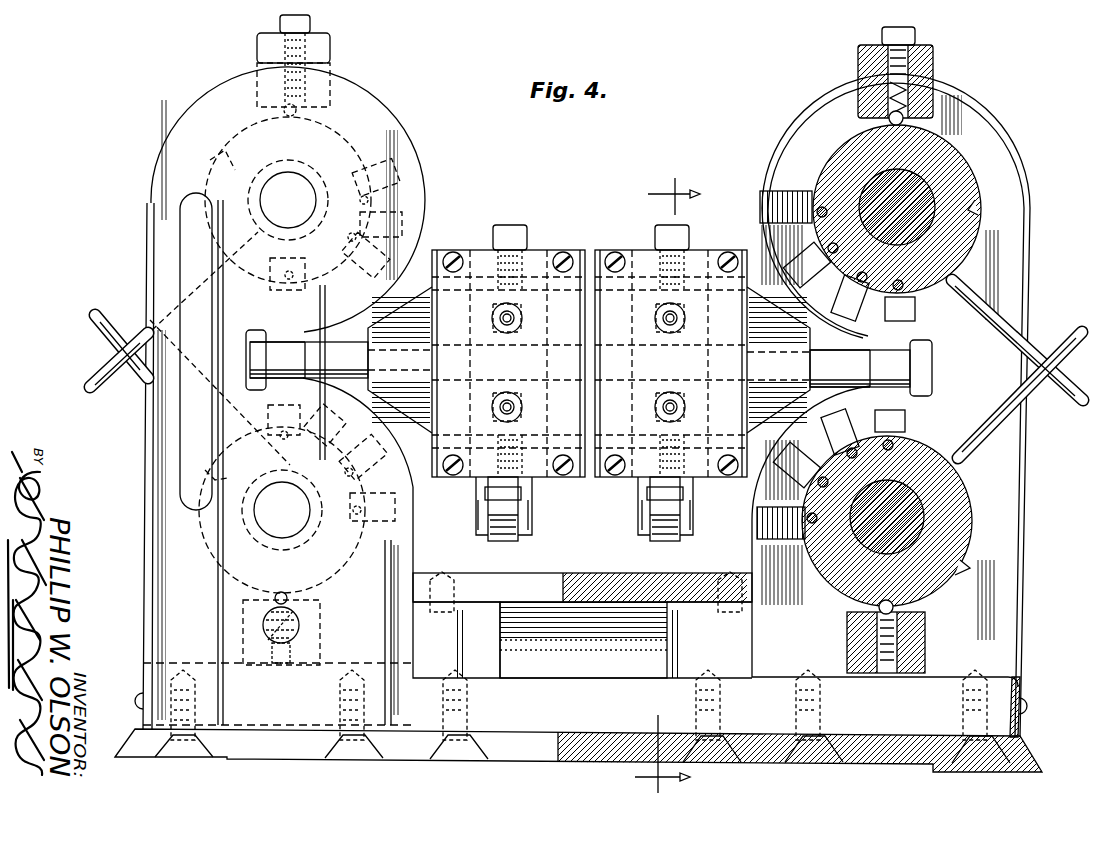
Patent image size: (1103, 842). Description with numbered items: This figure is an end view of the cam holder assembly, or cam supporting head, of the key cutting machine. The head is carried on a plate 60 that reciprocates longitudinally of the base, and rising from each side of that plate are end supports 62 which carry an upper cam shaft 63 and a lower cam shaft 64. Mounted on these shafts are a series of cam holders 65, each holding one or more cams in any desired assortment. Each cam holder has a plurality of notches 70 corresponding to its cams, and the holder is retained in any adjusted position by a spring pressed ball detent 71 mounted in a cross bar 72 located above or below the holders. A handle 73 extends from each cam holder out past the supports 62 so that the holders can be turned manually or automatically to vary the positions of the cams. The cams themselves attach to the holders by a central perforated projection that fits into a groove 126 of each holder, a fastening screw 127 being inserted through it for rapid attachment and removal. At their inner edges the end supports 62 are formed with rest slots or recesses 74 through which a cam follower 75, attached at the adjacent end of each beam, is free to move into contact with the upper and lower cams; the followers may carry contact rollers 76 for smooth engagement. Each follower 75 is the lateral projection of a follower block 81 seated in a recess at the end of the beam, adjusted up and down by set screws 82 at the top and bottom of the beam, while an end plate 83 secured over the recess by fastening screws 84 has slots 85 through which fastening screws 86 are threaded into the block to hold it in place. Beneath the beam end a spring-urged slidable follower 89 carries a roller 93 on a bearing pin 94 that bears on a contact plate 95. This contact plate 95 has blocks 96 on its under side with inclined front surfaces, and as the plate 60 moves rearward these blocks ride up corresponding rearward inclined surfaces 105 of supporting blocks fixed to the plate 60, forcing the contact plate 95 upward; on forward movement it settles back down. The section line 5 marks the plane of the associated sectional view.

The section line 5- 5 is at (657, 485).
The plate 60 is at (265, 748).
The end supports 62 is at (198, 120).
The upper cam shaft 63 is at (286, 178).
The lower cam shaft 64 is at (280, 518).
The cam holder 65 is at (205, 165).
The notches 70 is at (205, 197).
The spring pressed ball detent 71 is at (300, 108).
The cross bar 72 is at (260, 47).
The handle 73 is at (100, 368).
The slots or recesses 74 is at (250, 342).
The cam follower 75 is at (338, 367).
The contact rollers 76 is at (258, 372).
The follower block 81 is at (415, 372).
The set screws 82 is at (486, 492).
The end plate 83 is at (475, 252).
The fastening screws 84 is at (612, 255).
The slots 85 is at (522, 312).
The fastening screws 86 is at (520, 400).
The slidable follower 89 is at (650, 490).
The roller 93 is at (505, 538).
The bearing pin 94 is at (478, 518).
The contact plate 95 is at (580, 575).
The blocks 96 is at (478, 660).
The rearward inclined surface 105 is at (592, 640).
The groove 126 is at (378, 185).
The fastening screw 127 is at (380, 198).